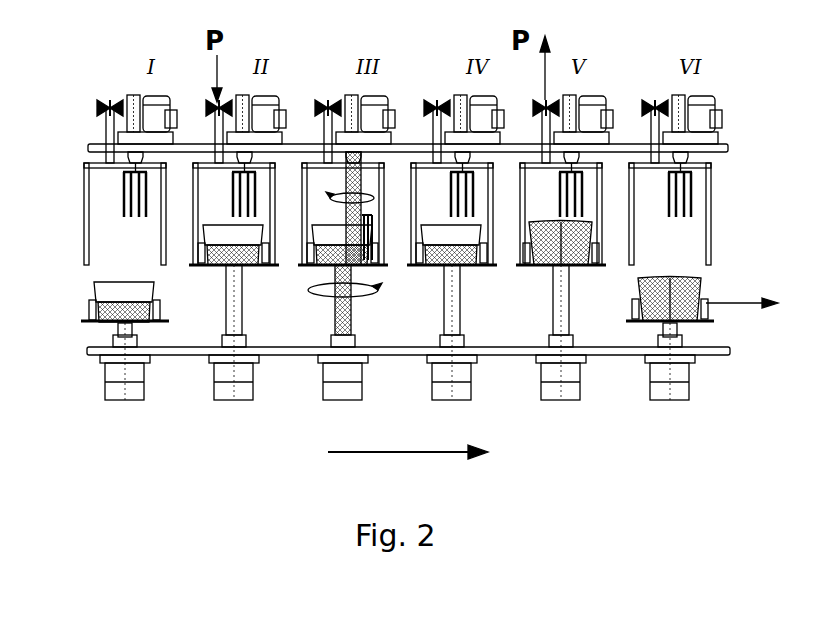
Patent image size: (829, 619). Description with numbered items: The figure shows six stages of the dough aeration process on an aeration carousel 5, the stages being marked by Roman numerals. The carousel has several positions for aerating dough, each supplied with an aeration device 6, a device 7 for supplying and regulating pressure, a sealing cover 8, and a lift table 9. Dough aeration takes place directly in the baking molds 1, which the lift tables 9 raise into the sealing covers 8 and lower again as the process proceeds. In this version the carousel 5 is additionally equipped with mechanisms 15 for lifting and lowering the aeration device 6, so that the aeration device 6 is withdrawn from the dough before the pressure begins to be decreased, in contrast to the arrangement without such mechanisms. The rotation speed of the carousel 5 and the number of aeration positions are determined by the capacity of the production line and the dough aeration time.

The baking mold 1 is at (108, 291).
The aeration carousel 5 is at (730, 350).
The aeration device 6 is at (122, 188).
The device for supplying and regulating pressure 7 is at (97, 105).
The sealing cover 8 is at (84, 163).
The lift table 9 is at (232, 283).
The mechanism for lifting and lowering the aeration device 15 is at (128, 99).